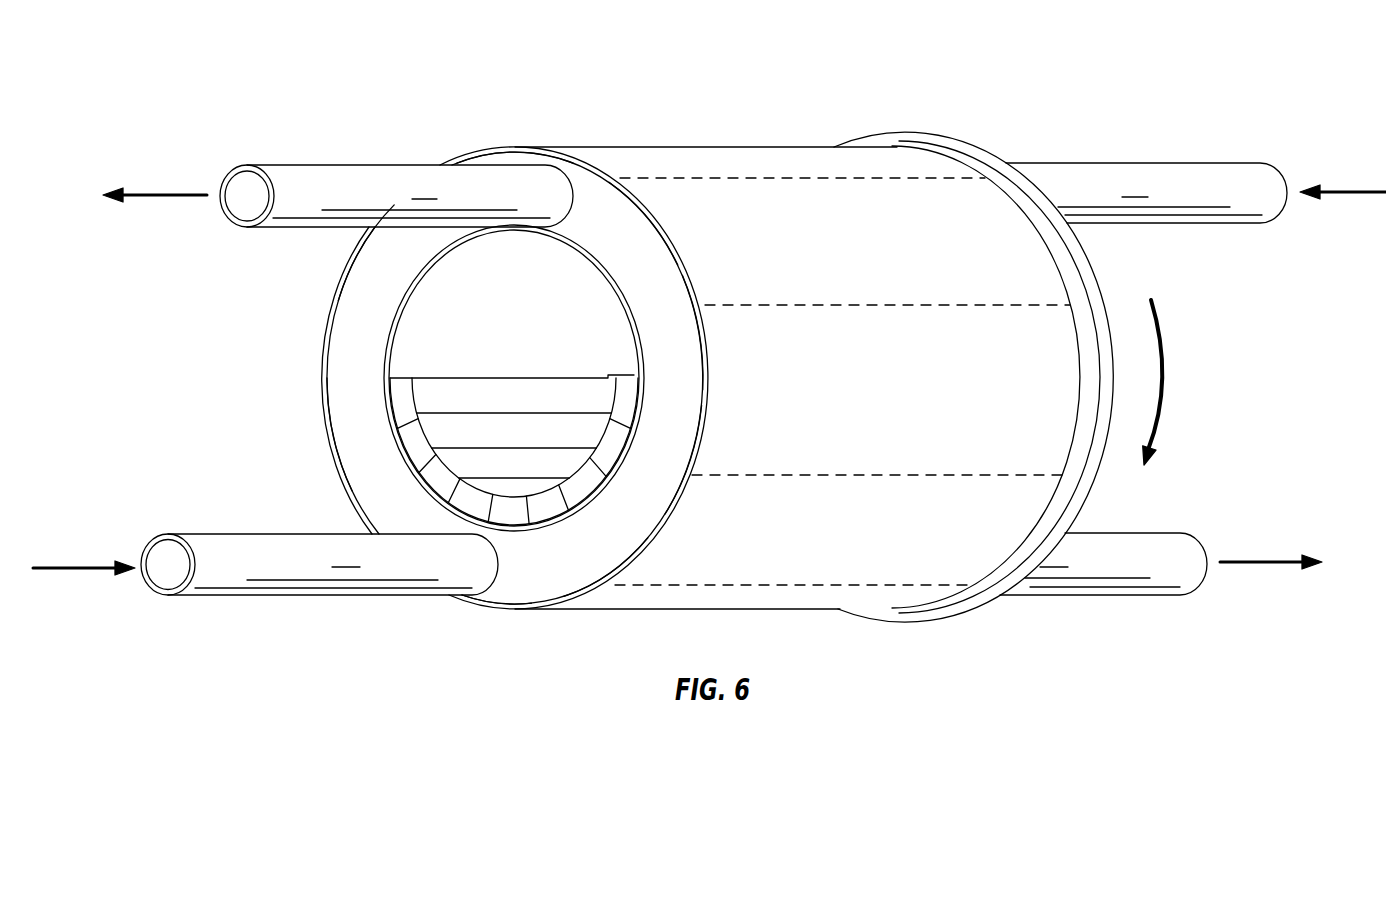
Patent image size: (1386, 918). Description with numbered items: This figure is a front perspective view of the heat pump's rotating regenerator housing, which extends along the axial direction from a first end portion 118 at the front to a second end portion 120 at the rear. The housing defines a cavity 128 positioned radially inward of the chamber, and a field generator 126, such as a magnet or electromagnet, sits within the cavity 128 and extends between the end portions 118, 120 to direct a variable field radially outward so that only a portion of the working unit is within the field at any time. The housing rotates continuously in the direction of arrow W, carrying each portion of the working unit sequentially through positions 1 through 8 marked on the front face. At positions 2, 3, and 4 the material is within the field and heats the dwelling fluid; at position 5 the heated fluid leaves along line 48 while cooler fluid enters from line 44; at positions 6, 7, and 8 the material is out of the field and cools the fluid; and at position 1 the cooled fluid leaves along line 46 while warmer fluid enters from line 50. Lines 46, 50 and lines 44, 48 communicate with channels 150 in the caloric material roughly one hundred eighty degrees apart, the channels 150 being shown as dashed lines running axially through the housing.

The first end portion 118 is at (440, 134).
The second end portion 120 is at (893, 105).
The cavity 128 is at (428, 340).
The field generator 126 is at (605, 432).
The position 1 is at (635, 223).
The position 2 is at (680, 332).
The position 3 is at (677, 460).
The position 4 is at (604, 565).
The position 5 is at (428, 520).
The position 6 is at (351, 434).
The position 7 is at (366, 257).
The position 8 is at (515, 158).
The line 46 is at (318, 178).
The line 44 is at (242, 548).
The line 50 is at (1187, 178).
The line 48 is at (1118, 556).
The channel 150 is at (782, 181).
The arrow W is at (1147, 366).